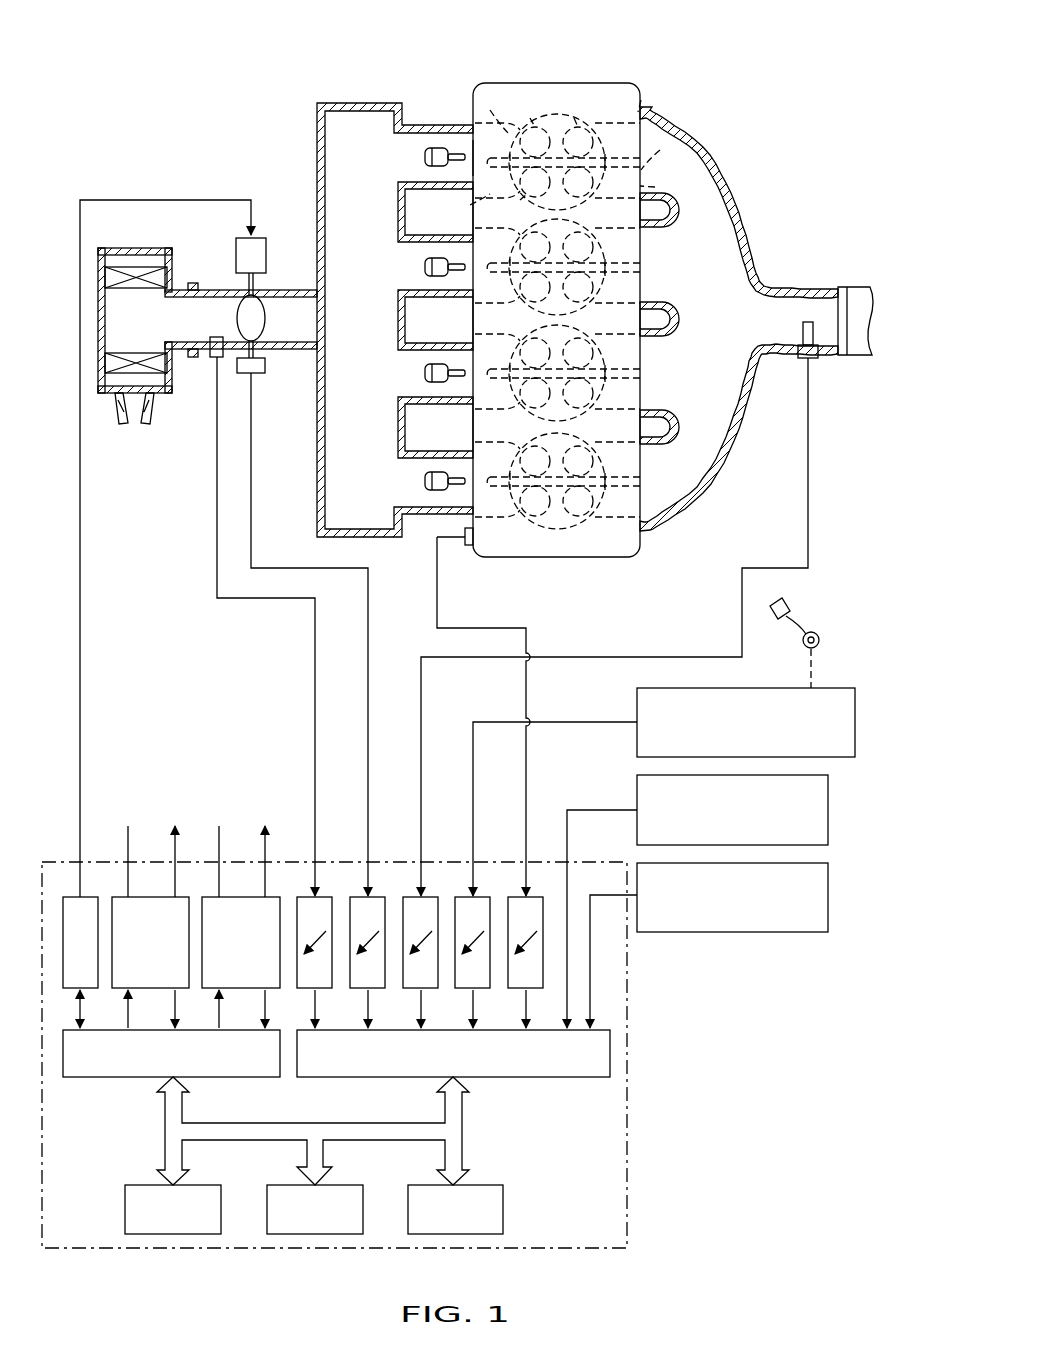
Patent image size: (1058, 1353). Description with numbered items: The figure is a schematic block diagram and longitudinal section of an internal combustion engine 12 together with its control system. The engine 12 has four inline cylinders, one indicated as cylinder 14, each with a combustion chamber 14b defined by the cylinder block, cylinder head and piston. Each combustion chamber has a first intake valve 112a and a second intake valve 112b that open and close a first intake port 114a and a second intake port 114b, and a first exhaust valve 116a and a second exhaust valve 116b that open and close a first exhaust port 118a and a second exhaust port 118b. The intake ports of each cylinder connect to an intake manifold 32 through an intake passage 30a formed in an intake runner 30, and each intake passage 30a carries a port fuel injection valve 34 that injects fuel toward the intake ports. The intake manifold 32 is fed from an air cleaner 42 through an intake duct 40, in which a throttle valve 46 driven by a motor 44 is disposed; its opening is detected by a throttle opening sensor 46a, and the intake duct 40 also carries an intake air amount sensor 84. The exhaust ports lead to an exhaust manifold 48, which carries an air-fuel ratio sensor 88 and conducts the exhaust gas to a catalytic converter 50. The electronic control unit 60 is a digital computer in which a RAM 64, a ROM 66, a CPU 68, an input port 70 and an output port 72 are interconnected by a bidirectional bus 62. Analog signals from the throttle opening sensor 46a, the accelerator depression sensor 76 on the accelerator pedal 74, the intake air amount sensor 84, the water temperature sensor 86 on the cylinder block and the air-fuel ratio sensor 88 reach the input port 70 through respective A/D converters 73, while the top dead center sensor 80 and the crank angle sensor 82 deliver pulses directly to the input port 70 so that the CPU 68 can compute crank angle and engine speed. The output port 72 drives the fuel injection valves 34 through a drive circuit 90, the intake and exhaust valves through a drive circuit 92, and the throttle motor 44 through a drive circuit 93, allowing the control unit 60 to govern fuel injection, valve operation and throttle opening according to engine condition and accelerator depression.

The internal combustion engine 12 is at (698, 58).
The cylinder 14 is at (576, 300).
The combustion chamber 14b is at (472, 450).
The intake runner 30 is at (431, 126).
The intake passage 30a is at (420, 180).
The intake manifold 32 is at (350, 103).
The port fuel injection valve 34 is at (437, 148).
The intake duct 40 is at (210, 290).
The air cleaner 42 is at (125, 250).
The motor 44 is at (258, 238).
The throttle valve 46 is at (266, 316).
The throttle opening sensor 46a is at (258, 375).
The exhaust manifold 48 is at (758, 250).
The catalytic converter 50 is at (861, 356).
The electronic control unit 60 is at (627, 1152).
The bidirectional bus 62 is at (165, 1140).
The RAM 64 is at (125, 1210).
The ROM 66 is at (350, 1186).
The CPU 68 is at (503, 1210).
The input port 70 is at (521, 1077).
The output port 72 is at (112, 1077).
The A/D converter 73 is at (307, 897).
The accelerator pedal 74 is at (806, 608).
The accelerator depression sensor 76 is at (856, 722).
The top dead center sensor 80 is at (829, 896).
The crank angle sensor 82 is at (829, 812).
The intake air amount sensor 84 is at (210, 340).
The water temperature sensor 86 is at (470, 546).
The air-fuel ratio sensor 88 is at (800, 360).
The drive circuit 90 is at (212, 897).
The drive circuit 92 is at (120, 897).
The drive circuit 93 is at (74, 897).
The first intake valve 112a is at (530, 118).
The second intake valve 112b is at (520, 200).
The first intake port 114a is at (490, 110).
The second intake port 114b is at (470, 205).
The first exhaust valve 116a is at (655, 187).
The second exhaust valve 116b is at (574, 118).
The first exhaust port 118a is at (641, 100).
The second exhaust port 118b is at (660, 150).